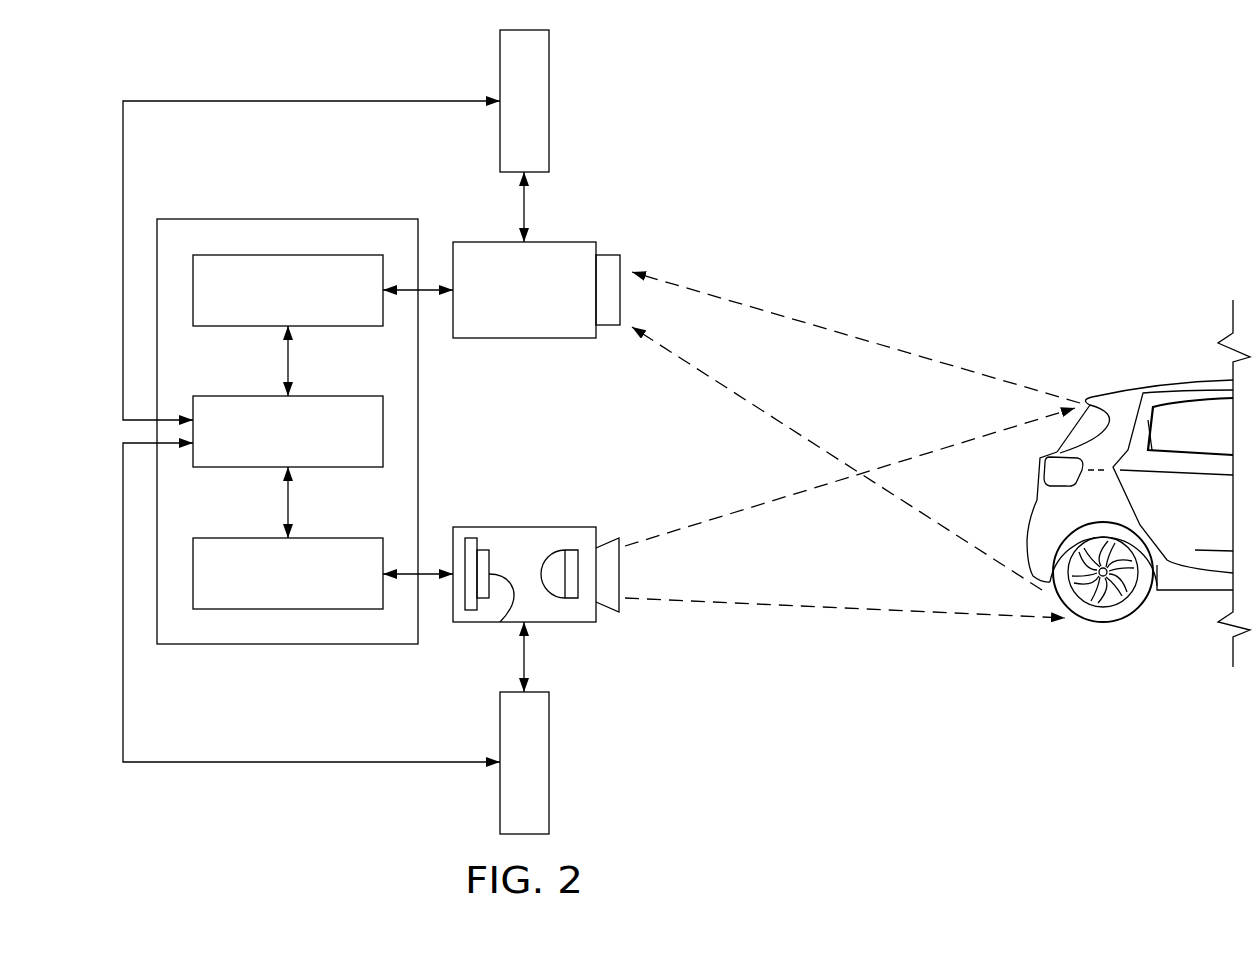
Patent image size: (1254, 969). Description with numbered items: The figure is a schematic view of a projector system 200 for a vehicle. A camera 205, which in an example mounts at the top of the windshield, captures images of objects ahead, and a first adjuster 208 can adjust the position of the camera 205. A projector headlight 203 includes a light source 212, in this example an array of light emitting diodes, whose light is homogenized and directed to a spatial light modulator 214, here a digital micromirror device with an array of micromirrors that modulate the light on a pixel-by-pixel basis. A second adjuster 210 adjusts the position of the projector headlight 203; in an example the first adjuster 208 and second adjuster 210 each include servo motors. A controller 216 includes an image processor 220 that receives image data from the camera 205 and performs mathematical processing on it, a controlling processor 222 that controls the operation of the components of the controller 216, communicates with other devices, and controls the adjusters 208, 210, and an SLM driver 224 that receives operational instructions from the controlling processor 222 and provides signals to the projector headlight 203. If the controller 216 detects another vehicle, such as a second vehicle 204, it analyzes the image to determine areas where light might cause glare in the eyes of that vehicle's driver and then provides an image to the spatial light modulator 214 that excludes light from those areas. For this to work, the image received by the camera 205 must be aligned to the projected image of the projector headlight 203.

The projector system 200 is at (824, 99).
The projector headlight 203 is at (502, 524).
The second vehicle 204 is at (1175, 382).
The camera 205 is at (548, 308).
The first adjuster 208 is at (508, 62).
The second adjuster 210 is at (508, 797).
The light source 212 is at (539, 564).
The spatial light modulator 214 is at (500, 622).
The controller 216 is at (252, 217).
The image processor 220 is at (256, 327).
The controlling processor 222 is at (322, 394).
The SLM driver 224 is at (253, 536).